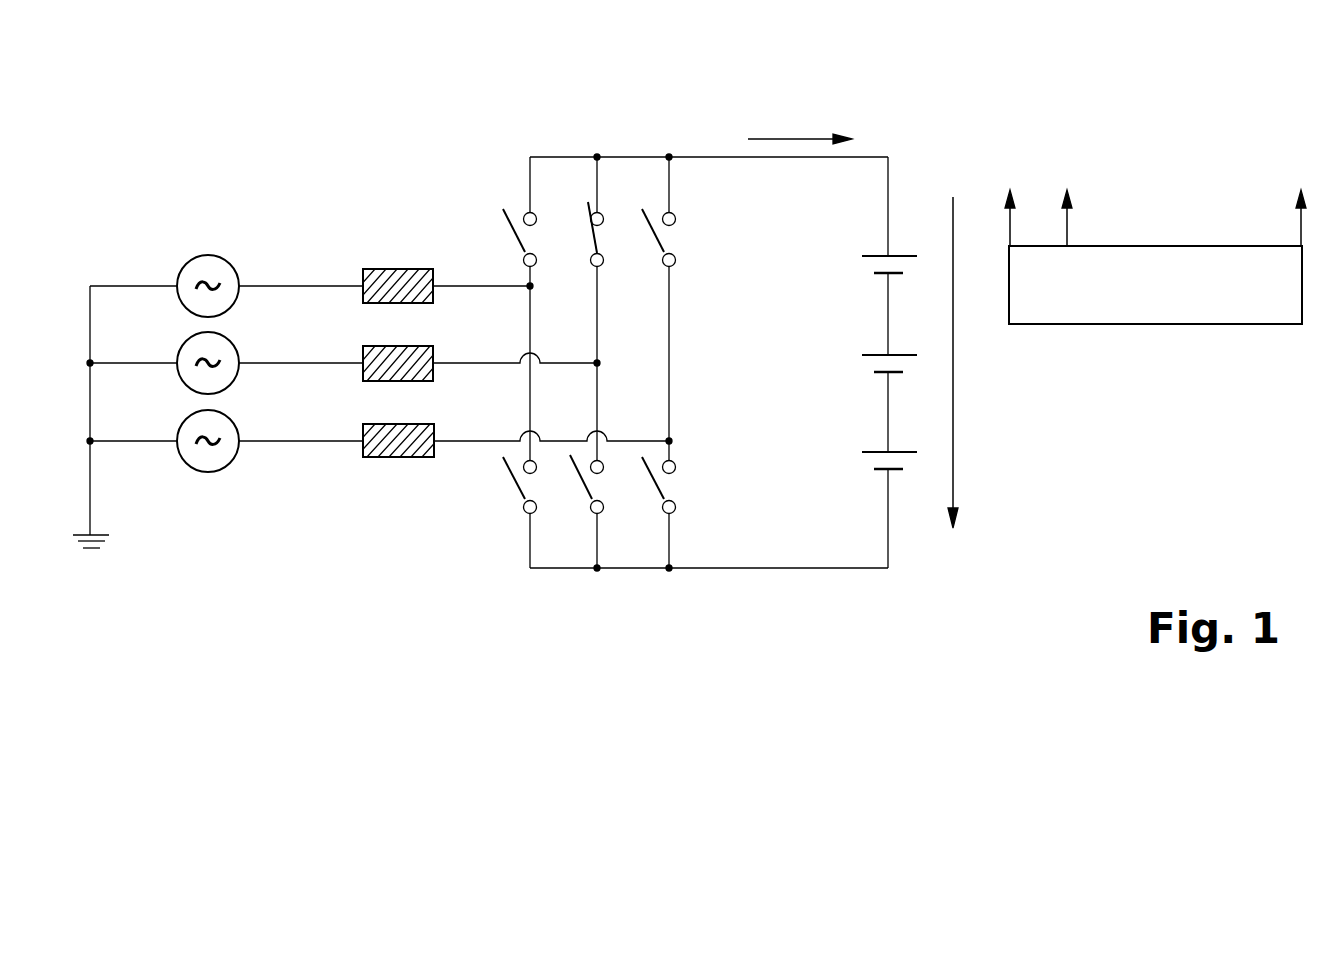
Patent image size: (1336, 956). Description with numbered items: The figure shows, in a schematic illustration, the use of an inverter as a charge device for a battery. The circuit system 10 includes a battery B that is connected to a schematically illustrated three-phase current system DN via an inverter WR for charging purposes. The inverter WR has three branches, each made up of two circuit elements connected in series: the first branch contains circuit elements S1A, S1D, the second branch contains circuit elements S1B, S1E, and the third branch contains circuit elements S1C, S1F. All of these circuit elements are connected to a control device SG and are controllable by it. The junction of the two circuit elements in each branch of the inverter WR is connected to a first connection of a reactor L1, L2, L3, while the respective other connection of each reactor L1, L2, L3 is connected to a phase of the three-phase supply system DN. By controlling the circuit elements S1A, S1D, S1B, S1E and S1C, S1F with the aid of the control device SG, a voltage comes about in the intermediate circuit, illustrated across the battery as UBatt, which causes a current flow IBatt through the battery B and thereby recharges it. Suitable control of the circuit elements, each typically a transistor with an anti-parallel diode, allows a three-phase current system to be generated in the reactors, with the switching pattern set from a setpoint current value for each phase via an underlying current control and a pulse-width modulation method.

The three-phase current system DN is at (186, 210).
The reactor L1 is at (398, 268).
The reactor L2 is at (362, 352).
The reactor L3 is at (397, 458).
The circuit element S1A is at (518, 232).
The circuit element S1B is at (588, 203).
The circuit element S1C is at (663, 237).
The circuit element S1D is at (518, 481).
The circuit element S1E is at (587, 487).
The circuit element S1F is at (665, 487).
The inverter WR is at (715, 317).
The battery B is at (820, 357).
The current flow through battery IBatt is at (800, 121).
The battery voltage UBatt is at (987, 362).
The circuit system 10 is at (1167, 371).
The control device SG is at (1240, 312).